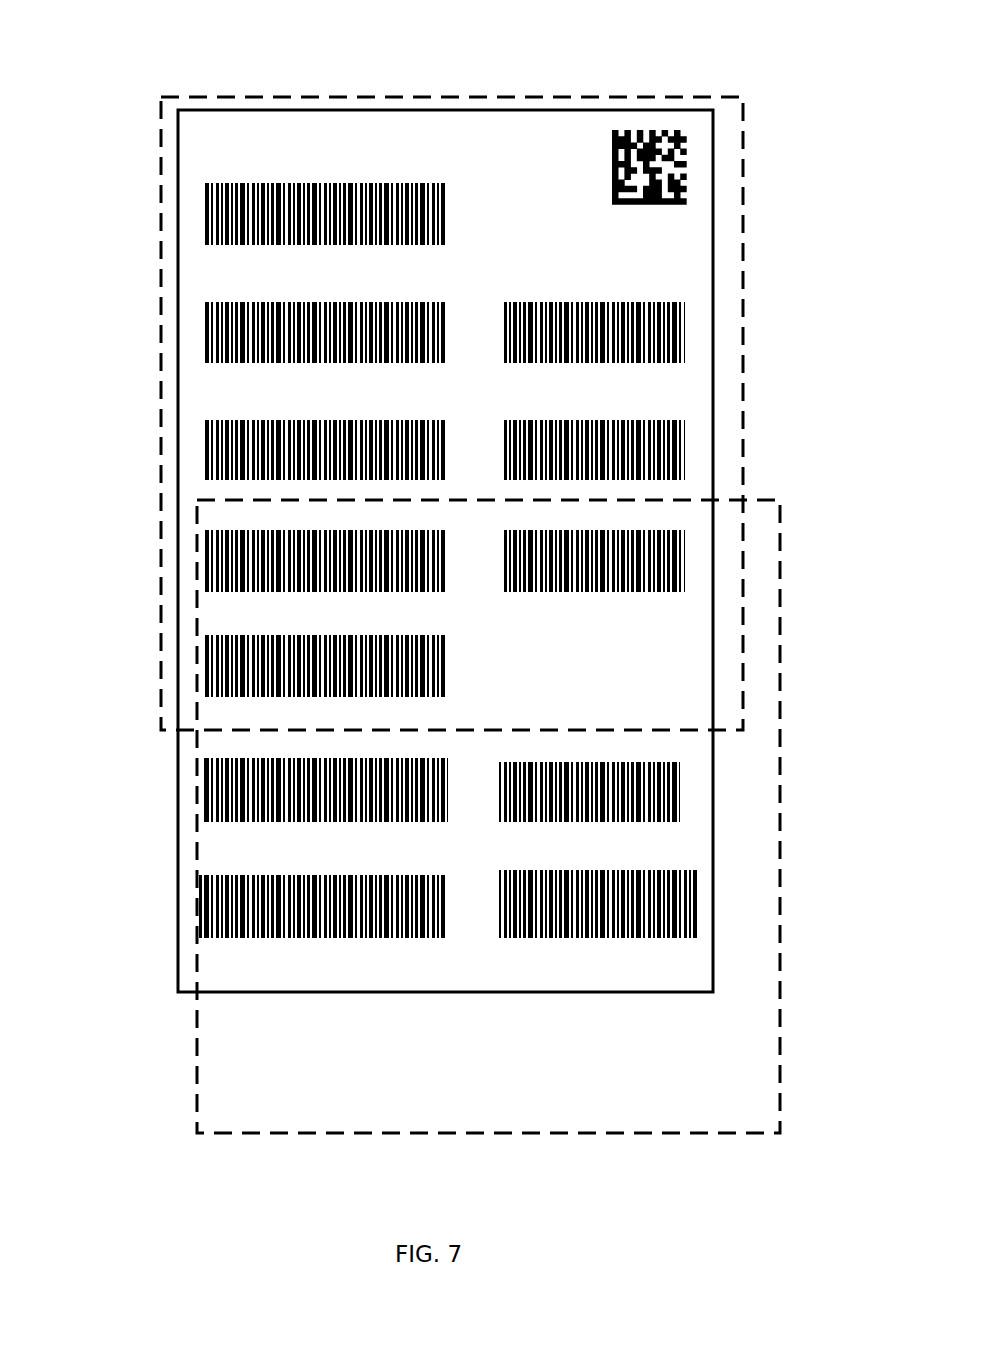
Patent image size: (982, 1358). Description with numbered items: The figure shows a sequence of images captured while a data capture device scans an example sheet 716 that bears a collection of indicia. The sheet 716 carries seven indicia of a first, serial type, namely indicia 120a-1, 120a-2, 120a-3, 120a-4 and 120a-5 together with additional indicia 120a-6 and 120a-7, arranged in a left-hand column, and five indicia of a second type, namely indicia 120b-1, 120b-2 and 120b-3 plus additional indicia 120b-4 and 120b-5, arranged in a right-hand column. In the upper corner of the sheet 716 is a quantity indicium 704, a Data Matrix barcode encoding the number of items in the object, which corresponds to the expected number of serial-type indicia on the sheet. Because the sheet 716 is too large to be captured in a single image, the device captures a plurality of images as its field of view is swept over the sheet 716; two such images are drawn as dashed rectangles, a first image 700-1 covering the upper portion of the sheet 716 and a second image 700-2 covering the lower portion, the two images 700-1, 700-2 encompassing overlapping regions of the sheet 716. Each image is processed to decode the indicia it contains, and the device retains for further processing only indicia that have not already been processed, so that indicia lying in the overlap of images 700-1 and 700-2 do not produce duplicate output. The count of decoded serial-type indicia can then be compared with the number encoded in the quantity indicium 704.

The first image 700-1 is at (158, 143).
The second image 700-2 is at (197, 1030).
The sheet 716 is at (264, 110).
The quantity indicium 704 is at (687, 167).
The indicium of first type 120a-1 is at (205, 212).
The indicium of first type 120a-2 is at (205, 328).
The indicium of first type 120a-3 is at (205, 452).
The indicium of first type 120a-4 is at (205, 561).
The indicium of first type 120a-5 is at (205, 668).
The additional indicium of first type 120a-6 is at (202, 787).
The additional indicium of first type 120a-7 is at (197, 915).
The indicium of second type 120b-1 is at (685, 342).
The indicium of second type 120b-2 is at (685, 448).
The indicium of second type 120b-3 is at (685, 570).
The additional indicium of second type 120b-4 is at (680, 802).
The additional indicium of second type 120b-5 is at (698, 913).